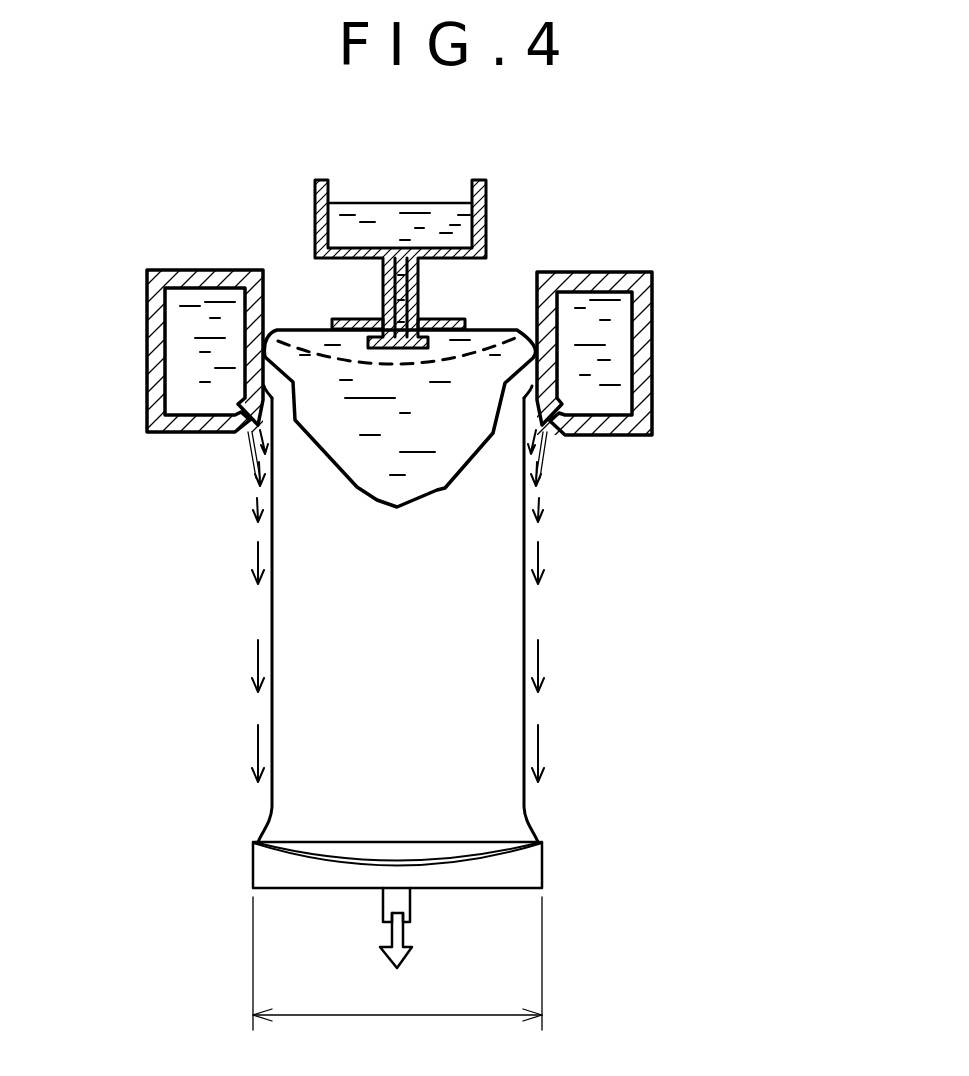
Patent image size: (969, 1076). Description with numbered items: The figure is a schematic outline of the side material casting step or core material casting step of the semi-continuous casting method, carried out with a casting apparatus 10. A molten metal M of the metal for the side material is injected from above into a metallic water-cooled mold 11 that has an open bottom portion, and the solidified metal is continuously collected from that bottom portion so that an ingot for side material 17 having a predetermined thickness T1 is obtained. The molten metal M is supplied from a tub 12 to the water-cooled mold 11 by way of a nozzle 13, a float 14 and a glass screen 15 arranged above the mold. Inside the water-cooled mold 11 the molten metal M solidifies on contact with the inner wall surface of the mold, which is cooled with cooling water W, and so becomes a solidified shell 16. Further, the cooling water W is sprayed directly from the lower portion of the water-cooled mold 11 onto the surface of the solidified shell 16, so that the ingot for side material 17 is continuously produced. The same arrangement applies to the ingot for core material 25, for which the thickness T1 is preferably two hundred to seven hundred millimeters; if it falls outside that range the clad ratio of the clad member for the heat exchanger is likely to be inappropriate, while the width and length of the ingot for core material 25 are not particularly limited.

The casting apparatus 10 is at (695, 140).
The water-cooled mold 11 is at (143, 387).
The tub 12 is at (488, 214).
The nozzle 13 is at (385, 296).
The float 14 is at (345, 318).
The glass screen 15 is at (485, 330).
The solidified shell 16 is at (425, 432).
The ingot for side material 17 is at (455, 632).
The ingot for core material 25 is at (397, 677).
The molten metal M is at (370, 218).
The cooling water W is at (182, 345).
The thickness T1 is at (397, 981).